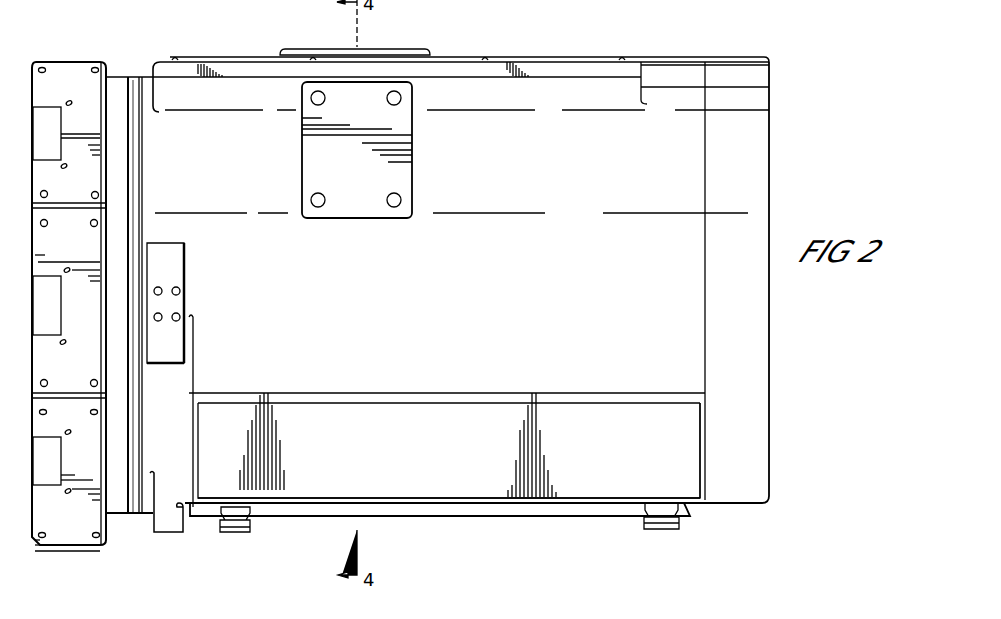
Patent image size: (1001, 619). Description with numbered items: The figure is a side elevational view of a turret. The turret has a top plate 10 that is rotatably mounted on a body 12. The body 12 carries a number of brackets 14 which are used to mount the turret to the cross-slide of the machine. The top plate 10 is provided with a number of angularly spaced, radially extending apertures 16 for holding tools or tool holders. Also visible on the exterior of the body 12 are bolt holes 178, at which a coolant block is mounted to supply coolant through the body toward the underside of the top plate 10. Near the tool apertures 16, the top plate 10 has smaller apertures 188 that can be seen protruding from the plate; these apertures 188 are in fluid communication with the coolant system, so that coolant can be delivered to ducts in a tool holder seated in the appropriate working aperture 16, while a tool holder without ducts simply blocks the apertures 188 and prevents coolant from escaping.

The top plate 10 is at (76, 67).
The body 12 is at (446, 270).
The brackets 14 is at (248, 530).
The apertures 16 is at (59, 122).
The bolt holes 178 is at (180, 291).
The apertures 188 is at (73, 85).